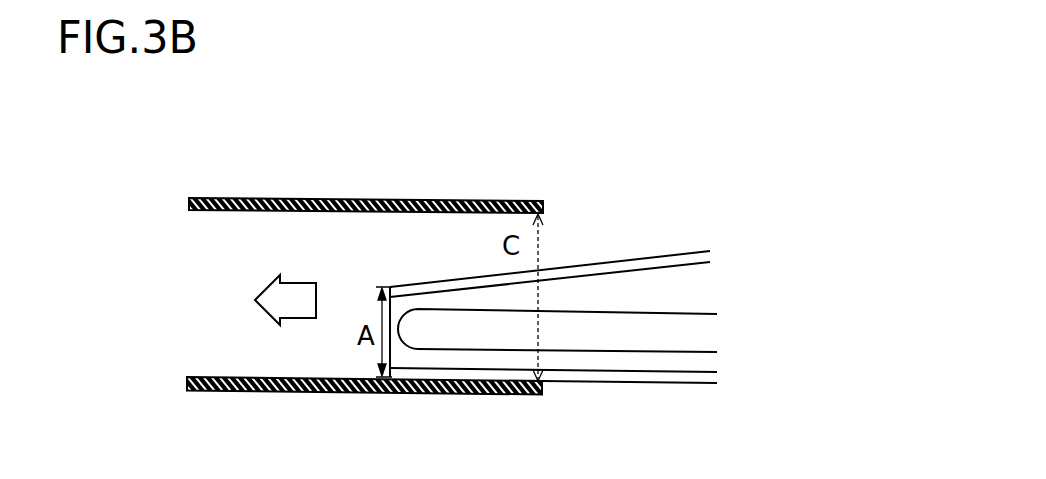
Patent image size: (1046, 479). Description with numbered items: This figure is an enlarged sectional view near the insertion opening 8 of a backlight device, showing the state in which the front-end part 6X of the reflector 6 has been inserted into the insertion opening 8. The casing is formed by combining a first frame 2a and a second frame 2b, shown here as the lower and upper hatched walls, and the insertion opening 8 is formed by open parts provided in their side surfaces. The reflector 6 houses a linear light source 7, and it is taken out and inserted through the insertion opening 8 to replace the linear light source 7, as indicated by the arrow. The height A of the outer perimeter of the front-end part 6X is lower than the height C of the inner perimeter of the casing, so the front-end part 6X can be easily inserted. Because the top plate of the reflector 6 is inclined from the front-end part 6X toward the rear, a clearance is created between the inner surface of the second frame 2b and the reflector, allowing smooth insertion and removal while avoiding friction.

The first frame 2a is at (295, 395).
The second frame 2b is at (323, 197).
The reflector 6 is at (638, 258).
The front-end part 6X is at (387, 228).
The linear light source 7 is at (609, 340).
The insertion opening 8 is at (545, 200).